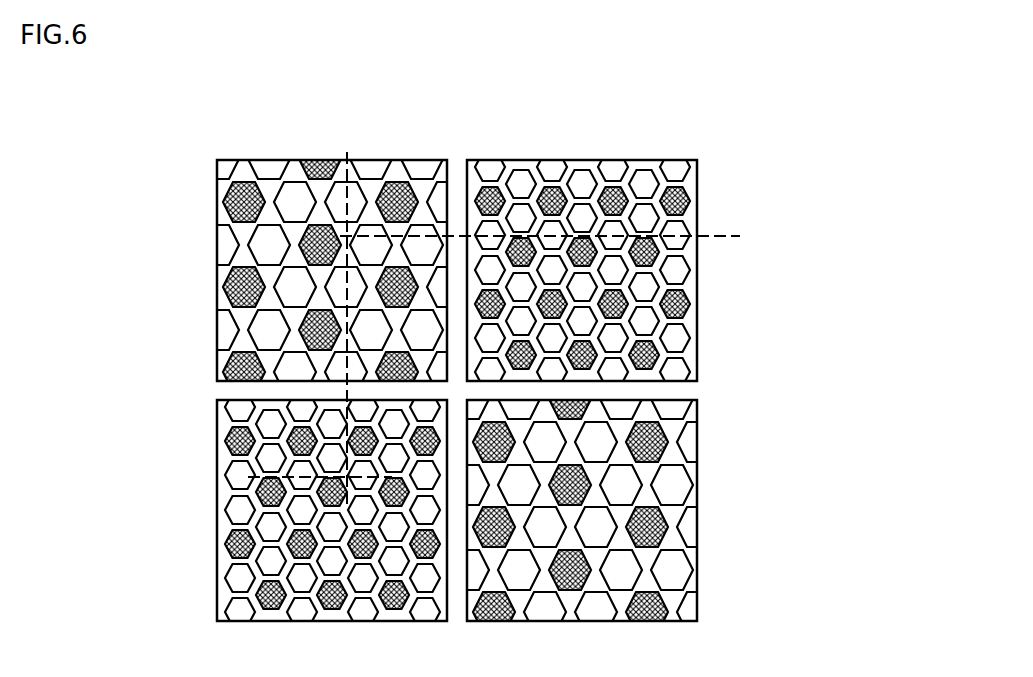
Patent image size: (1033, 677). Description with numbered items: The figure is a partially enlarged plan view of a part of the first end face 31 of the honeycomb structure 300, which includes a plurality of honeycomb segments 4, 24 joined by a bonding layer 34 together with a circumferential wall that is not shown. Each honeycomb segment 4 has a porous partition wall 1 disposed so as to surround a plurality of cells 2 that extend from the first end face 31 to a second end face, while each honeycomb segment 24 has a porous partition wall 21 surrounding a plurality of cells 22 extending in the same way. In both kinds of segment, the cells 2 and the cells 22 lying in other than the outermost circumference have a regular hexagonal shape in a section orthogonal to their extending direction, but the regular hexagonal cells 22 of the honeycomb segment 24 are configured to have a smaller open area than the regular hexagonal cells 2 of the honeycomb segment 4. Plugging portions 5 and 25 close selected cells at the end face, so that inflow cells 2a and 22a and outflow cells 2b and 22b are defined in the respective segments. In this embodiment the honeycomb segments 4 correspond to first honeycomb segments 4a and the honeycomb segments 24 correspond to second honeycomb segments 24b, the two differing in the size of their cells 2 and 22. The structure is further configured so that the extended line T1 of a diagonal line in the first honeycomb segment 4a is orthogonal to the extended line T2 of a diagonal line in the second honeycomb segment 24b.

The honeycomb structure 300 is at (777, 57).
The first end face 31 is at (194, 142).
The honeycomb segment 4 is at (463, 357).
The first honeycomb segment 4a is at (202, 286).
The plugging portion 5 is at (243, 222).
The partition wall 1 is at (322, 216).
The cell 2 is at (403, 195).
The inflow cell 2a is at (348, 297).
The outflow cell 2b is at (407, 195).
The extended line of diagonal line T1 is at (347, 297).
The honeycomb segment 24 is at (461, 357).
The second honeycomb segment 24b is at (715, 217).
The plugging portion 25 is at (556, 215).
The partition wall 21 is at (574, 210).
The cell 22 is at (718, 201).
The inflow cell 22a is at (616, 229).
The outflow cell 22b is at (663, 258).
The extended line of diagonal line T2 is at (614, 237).
The bonding layer 34 is at (638, 390).